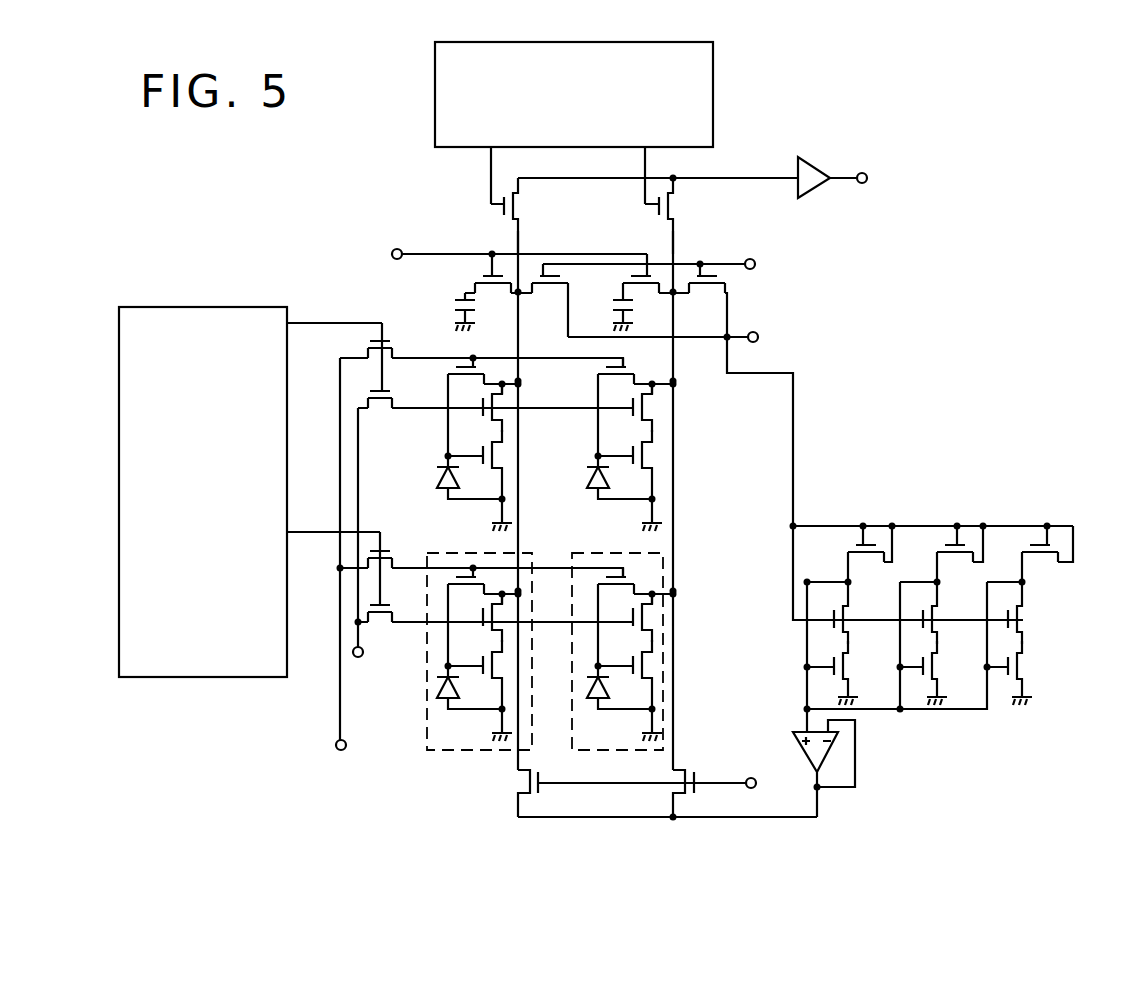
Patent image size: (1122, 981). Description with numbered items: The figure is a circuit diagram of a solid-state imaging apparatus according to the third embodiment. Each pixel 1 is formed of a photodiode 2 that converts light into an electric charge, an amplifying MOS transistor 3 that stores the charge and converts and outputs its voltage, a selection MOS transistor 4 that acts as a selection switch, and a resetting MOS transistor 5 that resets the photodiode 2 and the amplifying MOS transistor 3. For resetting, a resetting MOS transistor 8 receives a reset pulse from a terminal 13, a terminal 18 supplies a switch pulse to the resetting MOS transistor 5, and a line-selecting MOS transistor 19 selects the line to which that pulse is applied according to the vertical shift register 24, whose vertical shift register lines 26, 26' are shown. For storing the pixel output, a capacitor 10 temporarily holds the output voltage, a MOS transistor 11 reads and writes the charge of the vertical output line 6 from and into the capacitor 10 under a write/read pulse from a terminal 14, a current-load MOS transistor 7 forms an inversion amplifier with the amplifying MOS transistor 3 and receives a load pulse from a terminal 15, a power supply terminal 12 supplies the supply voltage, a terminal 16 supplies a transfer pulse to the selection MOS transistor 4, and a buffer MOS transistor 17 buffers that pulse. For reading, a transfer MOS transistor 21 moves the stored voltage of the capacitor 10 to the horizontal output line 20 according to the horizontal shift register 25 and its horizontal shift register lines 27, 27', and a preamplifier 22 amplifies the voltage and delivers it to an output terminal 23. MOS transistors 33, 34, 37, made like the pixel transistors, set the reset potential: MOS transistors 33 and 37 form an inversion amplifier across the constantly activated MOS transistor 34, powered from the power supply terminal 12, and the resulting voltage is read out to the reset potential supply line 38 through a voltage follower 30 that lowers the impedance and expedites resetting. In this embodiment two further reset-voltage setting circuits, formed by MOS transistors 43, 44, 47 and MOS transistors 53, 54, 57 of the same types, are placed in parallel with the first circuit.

The pixel 1 is at (540, 628).
The photodiode 2 is at (523, 696).
The amplifying MOS transistor 3 is at (554, 665).
The selection MOS transistor 4 is at (557, 617).
The resetting MOS transistor 5 is at (518, 586).
The vertical output line 6 is at (520, 475).
The current-load MOS transistor 7 is at (543, 300).
The resetting MOS transistor 8 is at (522, 782).
The capacitor 10 is at (481, 303).
The MOS transistor 11 is at (477, 285).
The power supply terminal 12 is at (759, 338).
The terminal 13 is at (757, 783).
The terminal 14 is at (397, 248).
The terminal 15 is at (756, 265).
The terminal 16 is at (359, 658).
The buffer MOS transistor 17 is at (395, 395).
The terminal 18 is at (341, 751).
The line-selecting MOS transistor 19 is at (391, 350).
The horizontal output line 20 is at (758, 177).
The transfer MOS transistor 21 is at (520, 204).
The preamplifier 22 is at (823, 164).
The output terminal 23 is at (863, 185).
The vertical shift register 24 is at (246, 305).
The horizontal shift register 25 is at (713, 96).
The vertical shift register line 26 is at (334, 296).
The vertical shift register line 26' is at (333, 507).
The horizontal shift register line 27 is at (438, 175).
The horizontal shift register line 27' is at (703, 170).
The voltage follower 30 is at (793, 737).
The MOS transistor 33 is at (848, 666).
The MOS transistor 34 is at (853, 612).
The MOS transistor 37 is at (853, 539).
The reset potential supply line 38 is at (755, 818).
The MOS transistor 43 is at (937, 668).
The MOS transistor 44 is at (950, 602).
The MOS transistor 47 is at (948, 539).
The MOS transistor 53 is at (1030, 668).
The MOS transistor 54 is at (1025, 618).
The MOS transistor 57 is at (1030, 547).